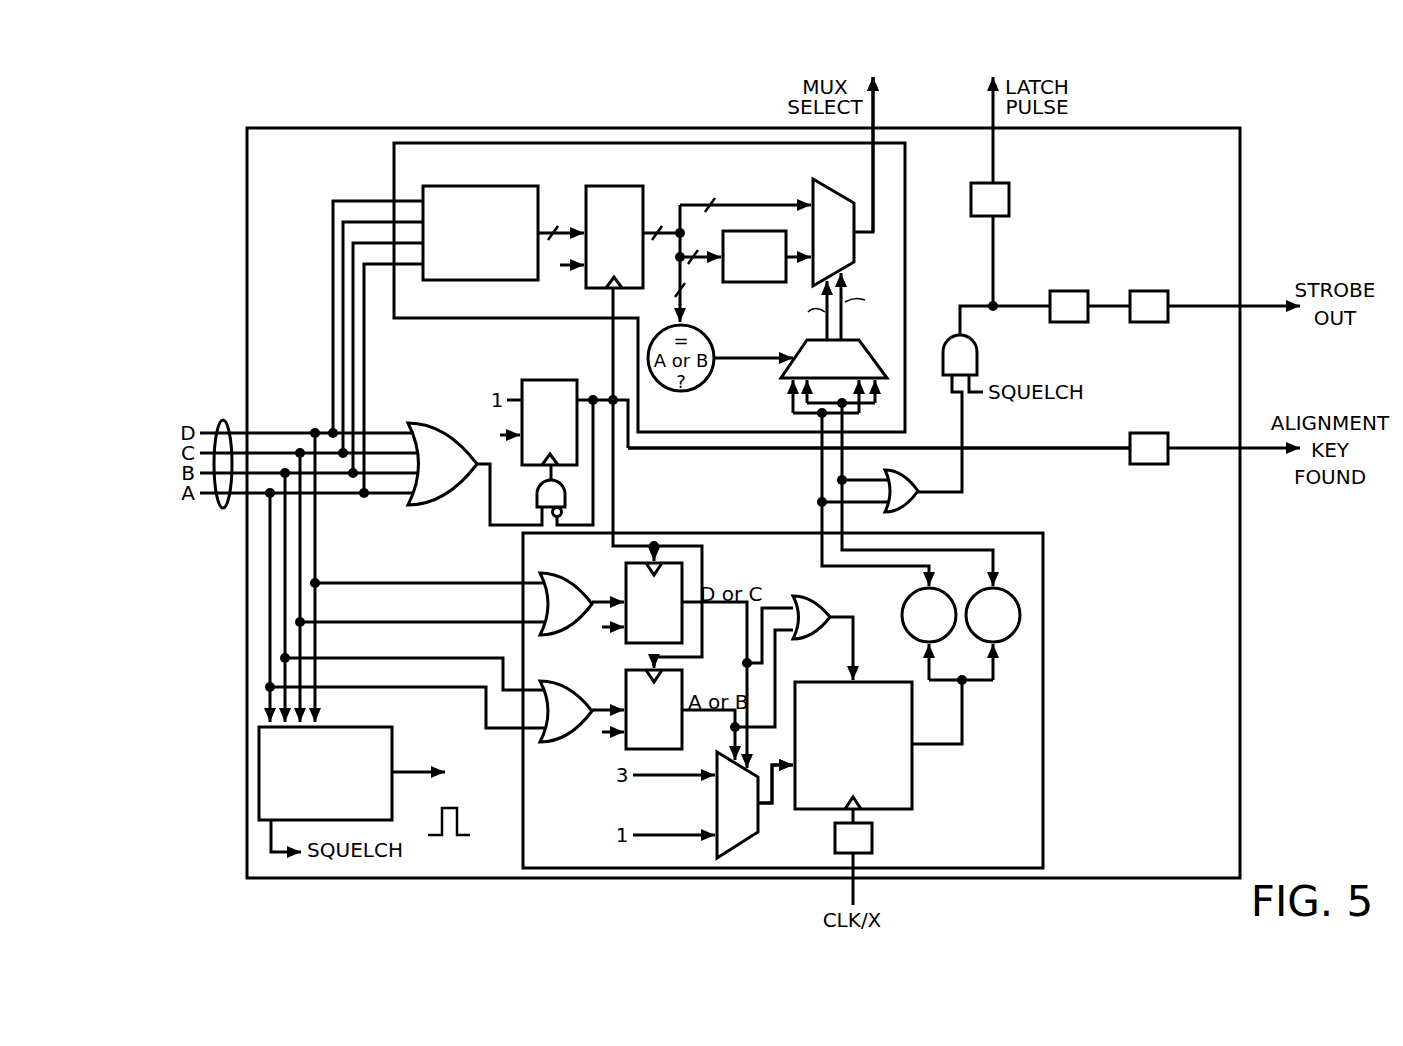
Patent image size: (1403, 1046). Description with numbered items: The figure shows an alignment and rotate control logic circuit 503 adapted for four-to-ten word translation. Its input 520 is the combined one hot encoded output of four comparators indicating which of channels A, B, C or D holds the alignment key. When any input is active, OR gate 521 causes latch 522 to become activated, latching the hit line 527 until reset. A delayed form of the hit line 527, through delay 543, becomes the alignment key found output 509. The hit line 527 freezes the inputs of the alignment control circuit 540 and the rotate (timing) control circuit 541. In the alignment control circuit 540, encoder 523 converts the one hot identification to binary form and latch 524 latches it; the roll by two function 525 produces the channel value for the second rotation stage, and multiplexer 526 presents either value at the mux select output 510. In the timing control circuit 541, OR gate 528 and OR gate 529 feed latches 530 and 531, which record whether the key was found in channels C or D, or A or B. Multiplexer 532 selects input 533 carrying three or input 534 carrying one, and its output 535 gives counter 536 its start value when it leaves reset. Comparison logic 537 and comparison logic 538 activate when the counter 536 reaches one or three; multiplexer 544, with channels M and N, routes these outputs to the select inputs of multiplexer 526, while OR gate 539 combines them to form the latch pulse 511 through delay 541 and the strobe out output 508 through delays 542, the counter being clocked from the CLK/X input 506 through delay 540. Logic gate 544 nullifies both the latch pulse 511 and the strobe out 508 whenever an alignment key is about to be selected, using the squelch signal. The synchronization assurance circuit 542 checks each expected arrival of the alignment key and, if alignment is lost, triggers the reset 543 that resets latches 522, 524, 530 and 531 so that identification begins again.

The alignment and rotate control logic circuit 503 is at (1122, 749).
The CLK/X input 506 is at (855, 895).
The strobe out output 508 is at (1255, 300).
The alignment key found output 509 is at (1257, 455).
The mux select output 510 is at (877, 107).
The latch pulse output 511 is at (990, 103).
The input 520 is at (232, 420).
The OR gate 521 is at (453, 428).
The latch 522 is at (550, 378).
The one-hot to binary encoder 523 is at (477, 285).
The latch 524 is at (596, 290).
The roll by 2 function 525 is at (771, 285).
The multiplexer 526 is at (838, 187).
The hit line 527 is at (657, 450).
The OR gate 528 is at (563, 632).
The OR gate 529 is at (563, 738).
The latch 530 is at (638, 609).
The latch 531 is at (638, 716).
The multiplexer 532 is at (722, 816).
The input 533 is at (688, 780).
The input 534 is at (688, 838).
The output of multiplexer 535 is at (770, 768).
The counter 536 is at (840, 678).
The =1? comparison logic 537 is at (914, 636).
The =3? comparison logic 538 is at (1010, 637).
The OR gate 539 is at (916, 506).
The alignment control circuit 540 is at (833, 840).
The rotate (timing) control circuit 541 is at (1022, 172).
The synchronization assurance circuit 542 is at (307, 814).
The reset 543 is at (1145, 432).
The multiplexer 544 is at (855, 340).